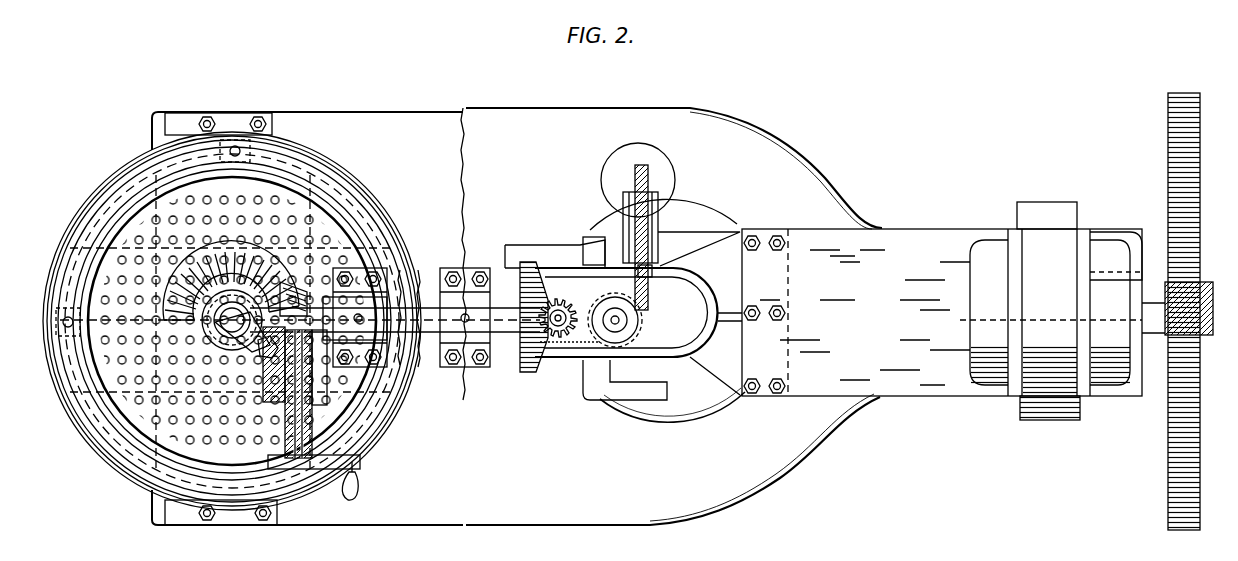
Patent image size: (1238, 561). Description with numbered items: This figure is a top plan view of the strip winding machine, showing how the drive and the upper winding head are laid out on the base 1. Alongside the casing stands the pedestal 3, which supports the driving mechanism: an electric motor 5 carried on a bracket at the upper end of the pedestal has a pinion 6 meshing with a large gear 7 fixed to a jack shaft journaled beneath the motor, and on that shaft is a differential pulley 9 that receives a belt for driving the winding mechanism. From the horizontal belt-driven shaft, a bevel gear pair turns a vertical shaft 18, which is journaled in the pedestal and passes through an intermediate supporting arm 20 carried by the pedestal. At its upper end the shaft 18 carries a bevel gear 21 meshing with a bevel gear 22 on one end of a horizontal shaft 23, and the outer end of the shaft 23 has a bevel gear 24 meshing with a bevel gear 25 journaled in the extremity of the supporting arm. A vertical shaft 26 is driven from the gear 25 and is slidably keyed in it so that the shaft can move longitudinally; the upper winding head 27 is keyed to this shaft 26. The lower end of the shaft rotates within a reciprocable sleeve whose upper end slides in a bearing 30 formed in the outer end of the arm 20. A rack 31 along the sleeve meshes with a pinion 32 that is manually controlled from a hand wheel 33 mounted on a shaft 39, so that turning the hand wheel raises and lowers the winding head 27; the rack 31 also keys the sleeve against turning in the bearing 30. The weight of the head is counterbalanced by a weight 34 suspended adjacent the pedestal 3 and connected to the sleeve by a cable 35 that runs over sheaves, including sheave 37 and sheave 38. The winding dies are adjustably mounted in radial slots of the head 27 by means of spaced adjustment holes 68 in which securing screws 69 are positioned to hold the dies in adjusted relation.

The base 1 is at (630, 507).
The pedestal 3 is at (700, 350).
The electric motor 5 is at (1062, 299).
The pinion 6 is at (1187, 317).
The large gear 7 is at (1180, 452).
The differential pulley 9 is at (1040, 420).
The vertical shaft 18 is at (565, 340).
The intermediate supporting arm 20 is at (320, 403).
The bevel gear 21 is at (572, 304).
The bevel gear 22 is at (535, 263).
The horizontal shaft 23 is at (400, 397).
The bevel gear 24 is at (401, 317).
The bevel gear 25 is at (270, 263).
The vertical shaft 26 is at (232, 320).
The upper winding head 27 is at (322, 190).
The bearing 30 is at (225, 340).
The rack 31 is at (258, 350).
The pinion 32 is at (335, 318).
The hand wheel 33 is at (357, 462).
The weight 34 is at (670, 170).
The cable 35 is at (648, 302).
The sheave 37 is at (630, 335).
The sheave 38 is at (640, 195).
The shaft 39 is at (330, 418).
The adjustment holes 68 is at (147, 388).
The securing screws 69 is at (297, 207).